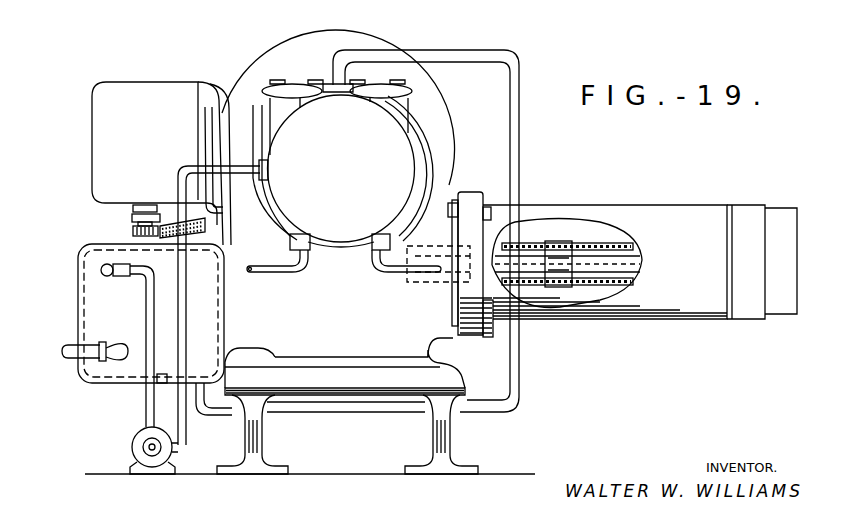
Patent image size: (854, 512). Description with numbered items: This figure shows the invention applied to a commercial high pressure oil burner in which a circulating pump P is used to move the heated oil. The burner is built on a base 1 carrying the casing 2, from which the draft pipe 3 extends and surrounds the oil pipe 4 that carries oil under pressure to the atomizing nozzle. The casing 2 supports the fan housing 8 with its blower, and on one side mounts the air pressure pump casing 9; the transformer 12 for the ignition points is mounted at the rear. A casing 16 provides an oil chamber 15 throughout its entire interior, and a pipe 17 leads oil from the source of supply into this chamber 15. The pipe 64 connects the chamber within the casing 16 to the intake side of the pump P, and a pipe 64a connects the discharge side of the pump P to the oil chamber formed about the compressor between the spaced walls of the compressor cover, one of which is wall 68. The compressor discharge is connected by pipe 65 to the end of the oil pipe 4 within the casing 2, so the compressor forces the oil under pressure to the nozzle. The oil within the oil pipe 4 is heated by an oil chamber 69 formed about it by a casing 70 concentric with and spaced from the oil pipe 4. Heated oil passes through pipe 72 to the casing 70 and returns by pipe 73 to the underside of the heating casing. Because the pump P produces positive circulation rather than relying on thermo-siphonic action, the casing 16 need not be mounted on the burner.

The base 1 is at (316, 392).
The casing 2 is at (371, 346).
The draft pipe 3 is at (648, 320).
The oil pipe 4 is at (610, 262).
The fan housing 8 is at (452, 133).
The air pressure pump casing 9 is at (432, 170).
The transformer 12 is at (161, 163).
The oil chamber 15 is at (84, 296).
The casing 16 is at (78, 270).
The pipe 17 is at (74, 362).
The pipe 64 is at (280, 272).
The pipe 64a is at (177, 182).
The pipe 65 is at (388, 272).
The compressor cover wall 68 is at (388, 145).
The oil chamber 69 is at (579, 252).
The casing 70 is at (530, 244).
The pipe 72 is at (461, 50).
The pipe 73 is at (497, 412).
The circulating pump P is at (132, 447).